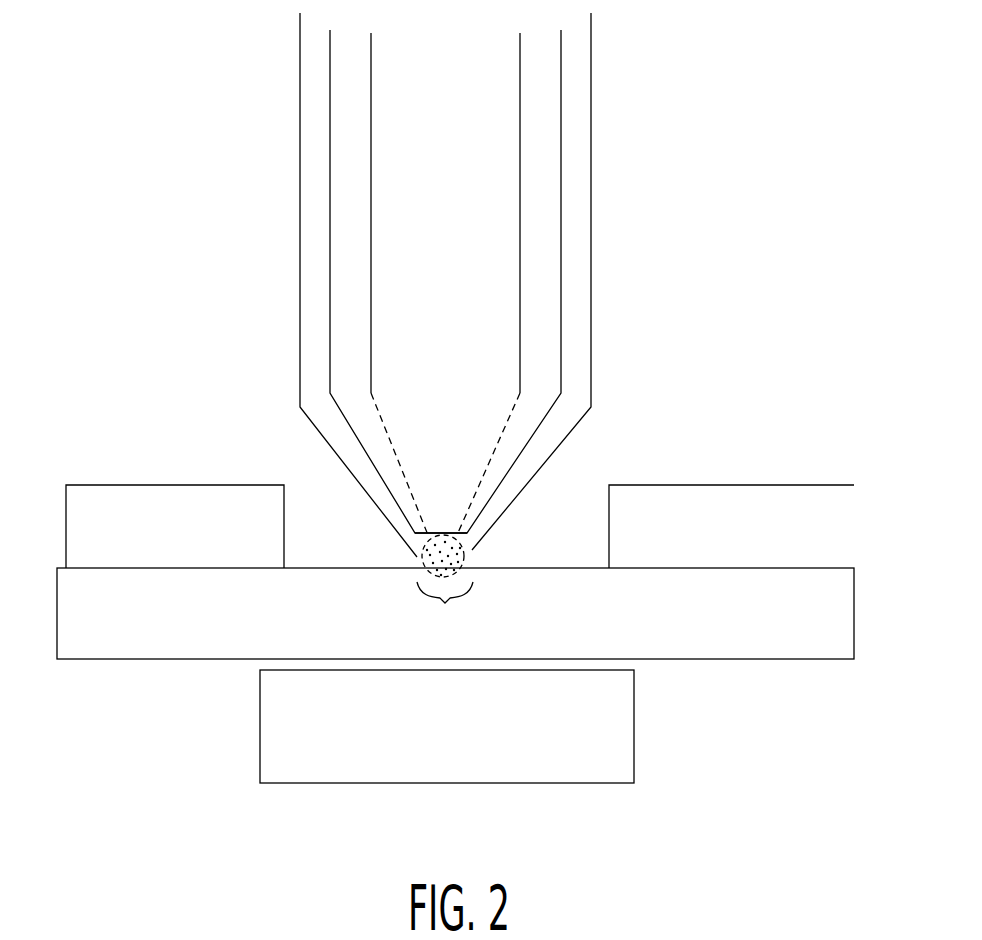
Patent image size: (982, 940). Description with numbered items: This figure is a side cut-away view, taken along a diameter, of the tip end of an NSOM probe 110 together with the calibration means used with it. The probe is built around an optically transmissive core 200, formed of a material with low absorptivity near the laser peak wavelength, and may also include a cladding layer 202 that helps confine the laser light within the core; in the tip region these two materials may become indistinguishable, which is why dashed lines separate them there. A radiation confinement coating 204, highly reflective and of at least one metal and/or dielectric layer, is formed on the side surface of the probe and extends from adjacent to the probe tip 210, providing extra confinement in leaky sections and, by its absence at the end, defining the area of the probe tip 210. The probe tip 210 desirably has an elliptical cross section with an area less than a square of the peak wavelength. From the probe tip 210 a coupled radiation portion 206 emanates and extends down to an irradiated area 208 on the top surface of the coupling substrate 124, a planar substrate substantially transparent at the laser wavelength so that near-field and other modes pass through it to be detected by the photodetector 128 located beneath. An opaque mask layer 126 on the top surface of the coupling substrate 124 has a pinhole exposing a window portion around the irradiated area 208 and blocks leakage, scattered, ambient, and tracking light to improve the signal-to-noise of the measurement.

The NSOM probe 110 is at (246, 70).
The optically transmissive core 200 is at (496, 80).
The cladding layer 202 is at (542, 222).
The radiation confinement coating 204 is at (310, 235).
The coupled radiation portion 206 is at (417, 558).
The irradiated area 208 is at (445, 610).
The probe tip 210 is at (445, 534).
The coupling substrate 124 is at (57, 660).
The opaque mask layer 126 is at (67, 508).
The photodetector 128 is at (260, 728).